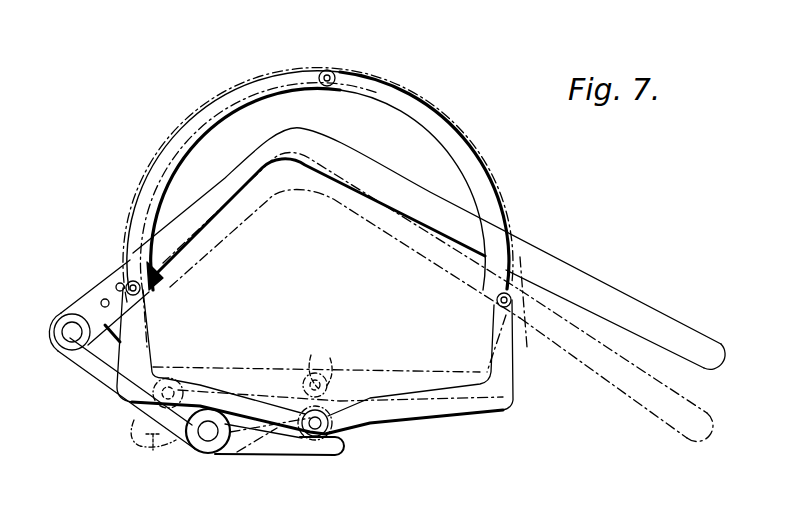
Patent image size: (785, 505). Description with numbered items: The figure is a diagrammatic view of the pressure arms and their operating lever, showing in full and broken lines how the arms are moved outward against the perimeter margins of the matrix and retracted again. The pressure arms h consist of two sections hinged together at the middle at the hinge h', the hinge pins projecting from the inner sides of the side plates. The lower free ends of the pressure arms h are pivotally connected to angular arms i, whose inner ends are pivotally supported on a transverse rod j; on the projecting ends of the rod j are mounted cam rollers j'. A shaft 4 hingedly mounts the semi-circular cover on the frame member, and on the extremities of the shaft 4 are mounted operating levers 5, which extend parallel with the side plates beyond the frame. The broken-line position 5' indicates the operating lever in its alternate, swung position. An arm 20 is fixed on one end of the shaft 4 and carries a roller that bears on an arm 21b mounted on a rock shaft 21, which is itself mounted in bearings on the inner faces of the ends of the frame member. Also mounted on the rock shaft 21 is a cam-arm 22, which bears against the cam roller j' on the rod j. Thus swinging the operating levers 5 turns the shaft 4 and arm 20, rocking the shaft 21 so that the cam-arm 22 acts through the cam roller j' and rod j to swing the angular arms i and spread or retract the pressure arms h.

The shaft 4 is at (70, 332).
The operating levers 5 is at (429, 249).
The handle in alternate position 5' is at (616, 365).
The arm 20 is at (97, 365).
The rock shaft 21 is at (208, 431).
The arm 21b is at (177, 428).
The cam-arm 22 is at (300, 447).
The pressure arms h is at (335, 207).
The hinge h' is at (330, 57).
The angular arms i is at (240, 398).
The transverse rod j is at (337, 275).
The cam rollers j' is at (334, 398).